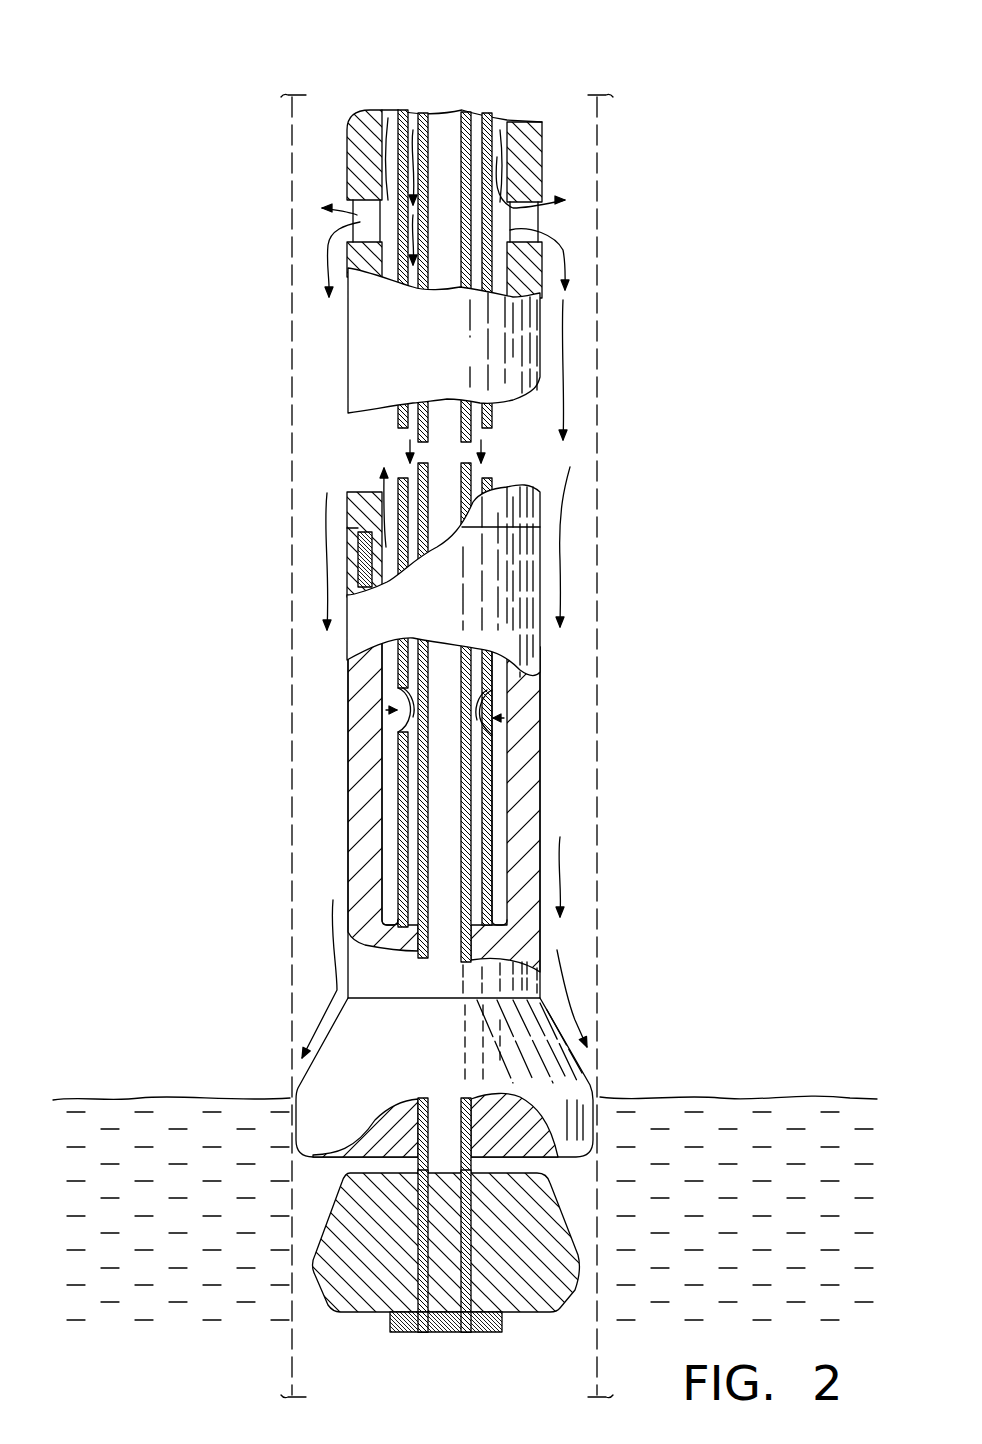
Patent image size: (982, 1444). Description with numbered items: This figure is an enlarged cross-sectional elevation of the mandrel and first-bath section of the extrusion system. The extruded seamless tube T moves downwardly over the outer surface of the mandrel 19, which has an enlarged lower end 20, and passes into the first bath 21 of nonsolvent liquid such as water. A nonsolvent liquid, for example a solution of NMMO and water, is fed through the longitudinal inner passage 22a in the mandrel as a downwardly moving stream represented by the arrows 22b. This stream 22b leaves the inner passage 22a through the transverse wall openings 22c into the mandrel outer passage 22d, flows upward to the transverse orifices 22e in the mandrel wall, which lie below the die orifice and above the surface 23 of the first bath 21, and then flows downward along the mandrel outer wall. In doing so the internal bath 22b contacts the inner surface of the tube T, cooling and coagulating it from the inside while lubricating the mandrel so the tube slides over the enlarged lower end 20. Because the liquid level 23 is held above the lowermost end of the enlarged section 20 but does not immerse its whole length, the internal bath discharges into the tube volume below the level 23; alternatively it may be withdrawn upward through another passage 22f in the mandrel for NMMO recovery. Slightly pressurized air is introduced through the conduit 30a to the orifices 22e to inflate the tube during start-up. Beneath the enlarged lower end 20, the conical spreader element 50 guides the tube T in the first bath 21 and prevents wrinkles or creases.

The mandrel 19 is at (523, 122).
The conduit 30a is at (392, 112).
The longitudinal inner passage 22a is at (478, 127).
The internal bath liquid stream 22b is at (411, 112).
The transverse wall openings 22c is at (484, 698).
The mandrel outer passage 22d is at (388, 792).
The transverse orifices 22e is at (357, 227).
The passage 22f is at (457, 1322).
The enlarged lower end 20 is at (382, 1027).
The spreader element 50 is at (368, 1313).
The first bath 21 is at (695, 1133).
The surface of first bath 23 is at (232, 1098).
The extruded seamless tube T is at (597, 600).